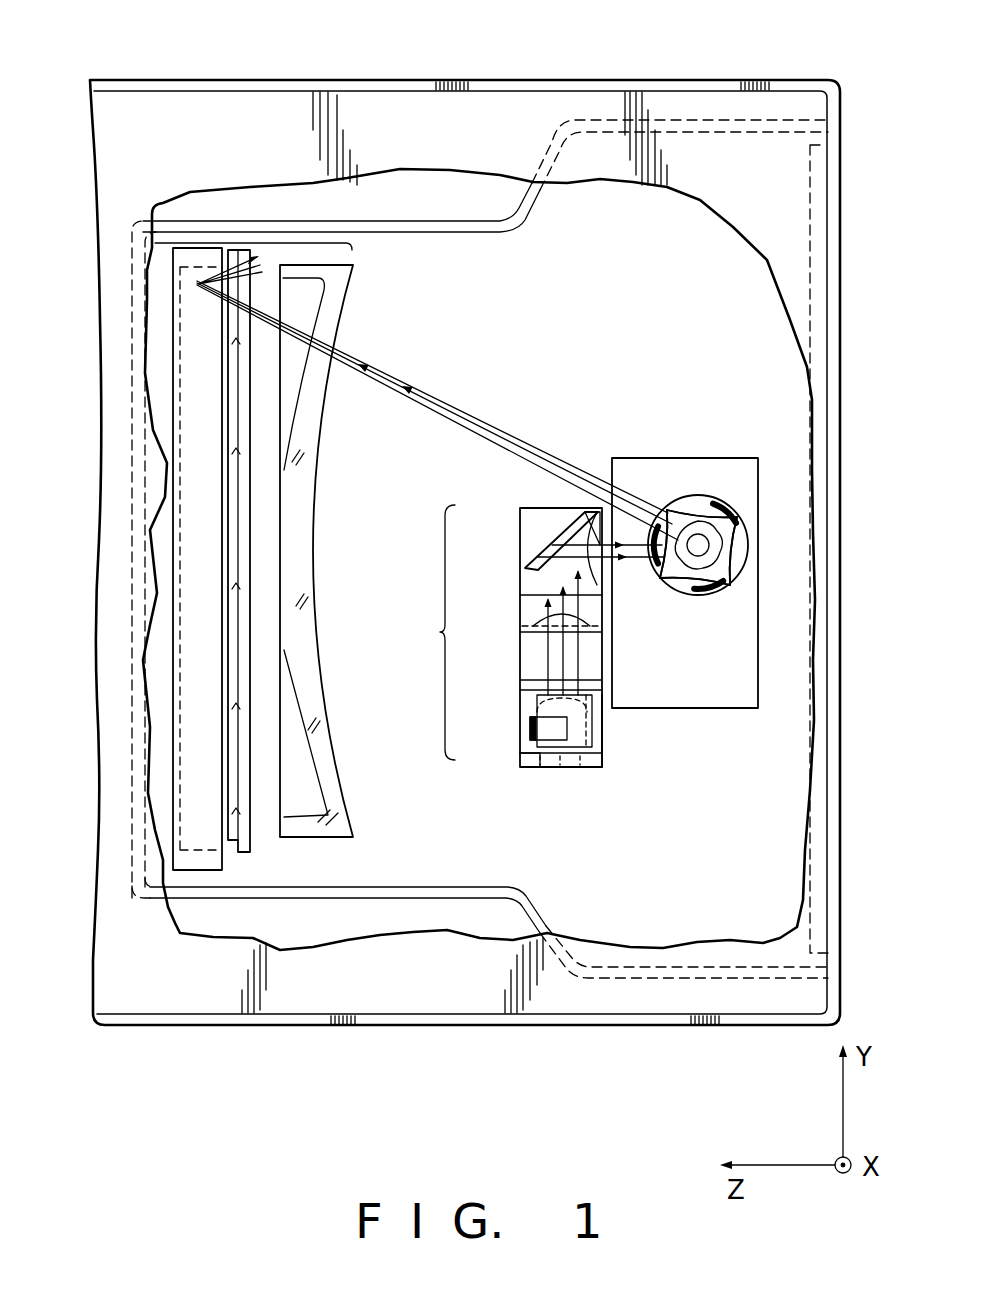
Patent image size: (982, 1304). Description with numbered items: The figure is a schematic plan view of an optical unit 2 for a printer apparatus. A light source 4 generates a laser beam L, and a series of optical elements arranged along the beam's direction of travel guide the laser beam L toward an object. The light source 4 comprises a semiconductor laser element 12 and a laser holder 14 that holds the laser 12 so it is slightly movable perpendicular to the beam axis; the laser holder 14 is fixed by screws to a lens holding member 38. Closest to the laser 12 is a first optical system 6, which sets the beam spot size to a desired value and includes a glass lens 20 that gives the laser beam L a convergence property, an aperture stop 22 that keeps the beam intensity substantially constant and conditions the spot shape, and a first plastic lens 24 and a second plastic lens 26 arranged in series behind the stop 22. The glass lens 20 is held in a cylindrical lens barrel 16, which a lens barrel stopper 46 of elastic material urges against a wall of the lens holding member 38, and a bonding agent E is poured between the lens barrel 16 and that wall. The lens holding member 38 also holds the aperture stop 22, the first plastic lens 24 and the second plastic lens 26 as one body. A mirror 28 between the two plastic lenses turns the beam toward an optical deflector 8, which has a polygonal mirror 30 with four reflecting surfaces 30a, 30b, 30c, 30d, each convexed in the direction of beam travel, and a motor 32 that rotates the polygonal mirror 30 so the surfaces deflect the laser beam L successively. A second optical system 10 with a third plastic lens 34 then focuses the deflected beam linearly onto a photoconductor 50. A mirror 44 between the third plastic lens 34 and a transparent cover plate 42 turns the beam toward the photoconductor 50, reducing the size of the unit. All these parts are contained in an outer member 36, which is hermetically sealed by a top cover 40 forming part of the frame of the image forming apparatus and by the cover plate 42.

The optical unit 2 is at (843, 78).
The light source 4 is at (590, 775).
The first optical system 6 is at (435, 632).
The optical deflector 8 is at (681, 452).
The second optical system 10 is at (246, 234).
The semiconductor laser element 12 is at (560, 770).
The laser holder 14 is at (533, 757).
The lens barrel 16 is at (578, 722).
The glass lens 20 is at (534, 703).
The aperture stop 22 is at (522, 682).
The first plastic lens 24 is at (532, 625).
The second plastic lens 26 is at (590, 518).
The mirror 28 is at (525, 568).
The polygonal mirror 30 is at (703, 578).
The reflecting surface 30a is at (732, 520).
The reflecting surface 30b is at (663, 520).
The reflecting surface 30c is at (672, 580).
The reflecting surface 30d is at (735, 580).
The motor 32 is at (750, 521).
The third plastic lens 34 is at (353, 840).
The outer member 36 is at (397, 899).
The lens holding member 38 is at (612, 744).
The top cover 40 is at (592, 78).
The cover plate 42 is at (192, 874).
The mirror 44 is at (249, 855).
The lens barrel stopper 46 is at (532, 730).
The photoconductor 50 is at (262, 258).
The laser beam L is at (446, 416).
The bonding agent E is at (578, 668).